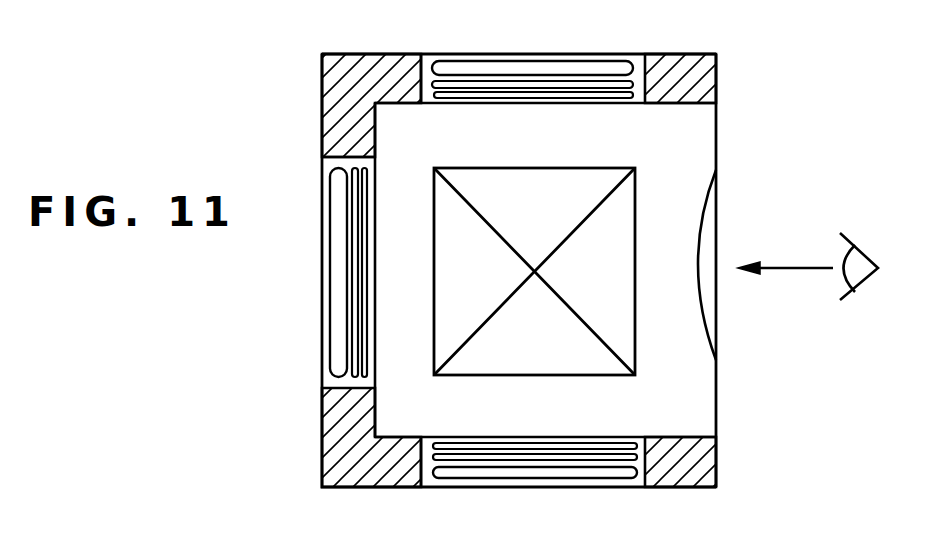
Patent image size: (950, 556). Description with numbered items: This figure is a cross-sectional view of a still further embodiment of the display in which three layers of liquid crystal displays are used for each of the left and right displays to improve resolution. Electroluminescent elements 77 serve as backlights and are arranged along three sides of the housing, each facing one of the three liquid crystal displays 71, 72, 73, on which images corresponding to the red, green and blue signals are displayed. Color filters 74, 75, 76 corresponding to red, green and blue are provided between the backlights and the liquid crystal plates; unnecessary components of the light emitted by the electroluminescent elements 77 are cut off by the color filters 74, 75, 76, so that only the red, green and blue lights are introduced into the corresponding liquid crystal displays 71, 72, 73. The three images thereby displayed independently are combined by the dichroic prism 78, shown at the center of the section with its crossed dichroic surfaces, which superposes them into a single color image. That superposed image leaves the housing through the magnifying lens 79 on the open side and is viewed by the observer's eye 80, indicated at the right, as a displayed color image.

The liquid crystal display 71 is at (424, 118).
The liquid crystal display 72 is at (368, 152).
The liquid crystal display 73 is at (455, 437).
The color filter 74 is at (418, 92).
The color filter 75 is at (357, 391).
The color filter 76 is at (637, 450).
The electroluminescent element 77 is at (537, 72).
The dichroic prism 78 is at (586, 168).
The magnifying lens 79 is at (717, 185).
The eye of observer 80 is at (853, 242).